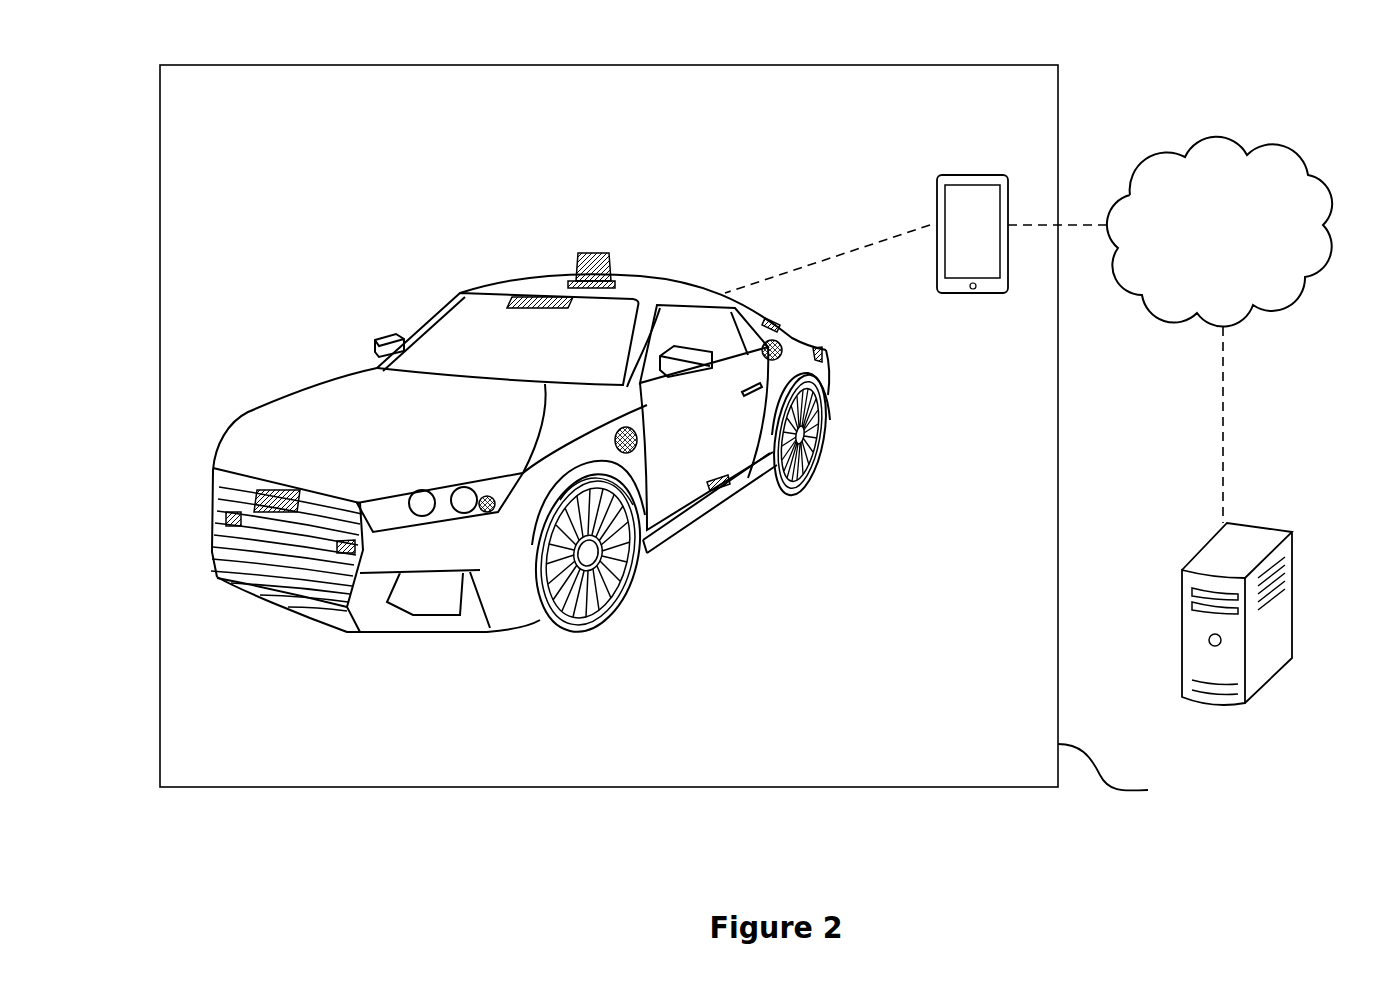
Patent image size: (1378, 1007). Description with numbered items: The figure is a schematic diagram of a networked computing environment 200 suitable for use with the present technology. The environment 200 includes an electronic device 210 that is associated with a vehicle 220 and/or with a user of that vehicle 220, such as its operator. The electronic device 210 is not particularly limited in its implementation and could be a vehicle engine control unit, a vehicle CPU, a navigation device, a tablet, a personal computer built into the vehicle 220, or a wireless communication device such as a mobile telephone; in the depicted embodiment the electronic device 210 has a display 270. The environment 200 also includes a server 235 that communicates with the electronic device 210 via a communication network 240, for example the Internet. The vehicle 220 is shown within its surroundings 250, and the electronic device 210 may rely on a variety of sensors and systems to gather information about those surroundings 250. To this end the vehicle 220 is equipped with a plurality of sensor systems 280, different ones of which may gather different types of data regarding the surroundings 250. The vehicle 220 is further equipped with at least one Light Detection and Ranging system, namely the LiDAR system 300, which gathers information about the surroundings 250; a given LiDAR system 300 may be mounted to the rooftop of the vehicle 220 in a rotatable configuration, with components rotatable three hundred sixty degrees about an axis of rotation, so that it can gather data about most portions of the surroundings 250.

The networked computing environment 200 is at (1228, 92).
The electronic device 210 is at (967, 175).
The vehicle 220 is at (744, 546).
The server 235 is at (1263, 525).
The communication network 240 is at (1197, 236).
The surroundings 250 is at (1130, 775).
The display 270 is at (980, 252).
The sensor systems 280 is at (240, 545).
The LiDAR system 300 is at (541, 285).